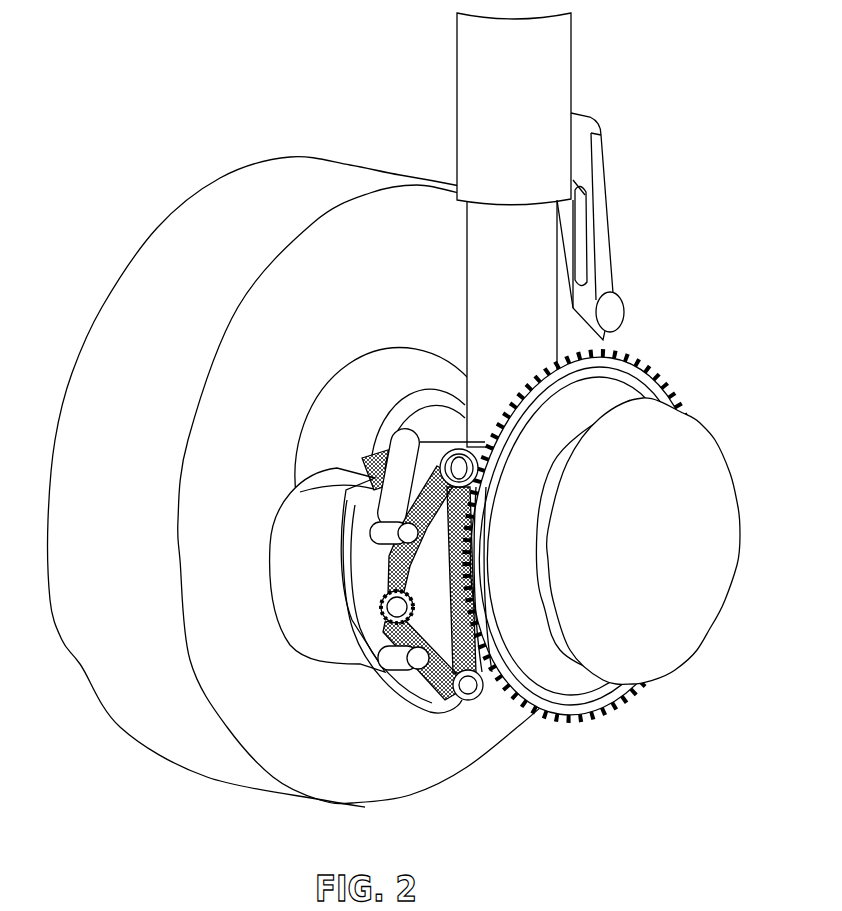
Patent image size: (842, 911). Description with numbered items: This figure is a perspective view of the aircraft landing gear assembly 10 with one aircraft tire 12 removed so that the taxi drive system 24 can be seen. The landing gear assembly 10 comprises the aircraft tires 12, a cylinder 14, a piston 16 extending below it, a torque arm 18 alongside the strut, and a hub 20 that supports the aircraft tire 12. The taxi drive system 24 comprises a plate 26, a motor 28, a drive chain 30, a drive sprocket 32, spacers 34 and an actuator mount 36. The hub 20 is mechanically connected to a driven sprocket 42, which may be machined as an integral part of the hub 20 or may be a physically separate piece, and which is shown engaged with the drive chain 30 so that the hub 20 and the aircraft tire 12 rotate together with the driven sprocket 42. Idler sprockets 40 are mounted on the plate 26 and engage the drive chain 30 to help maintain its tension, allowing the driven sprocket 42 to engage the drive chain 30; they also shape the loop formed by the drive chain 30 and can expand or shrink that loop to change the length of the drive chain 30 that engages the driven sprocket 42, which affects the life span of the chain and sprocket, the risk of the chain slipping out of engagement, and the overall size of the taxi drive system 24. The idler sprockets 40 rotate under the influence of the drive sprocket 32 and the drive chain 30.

The aircraft landing gear assembly 10 is at (630, 46).
The aircraft tire 12 is at (156, 228).
The cylinder 14 is at (457, 78).
The piston 16 is at (474, 272).
The torque arm 18 is at (606, 233).
The hub 20 is at (708, 443).
The taxi drive system 24 is at (278, 466).
The plate 26 is at (404, 450).
The motor 28 is at (267, 544).
The drive chain 30 is at (390, 557).
The drive sprocket 32 is at (393, 608).
The spacers 34 is at (400, 530).
The actuator mount 36 is at (364, 461).
The idler sprockets 40 is at (452, 462).
The driven sprocket 42 is at (668, 372).